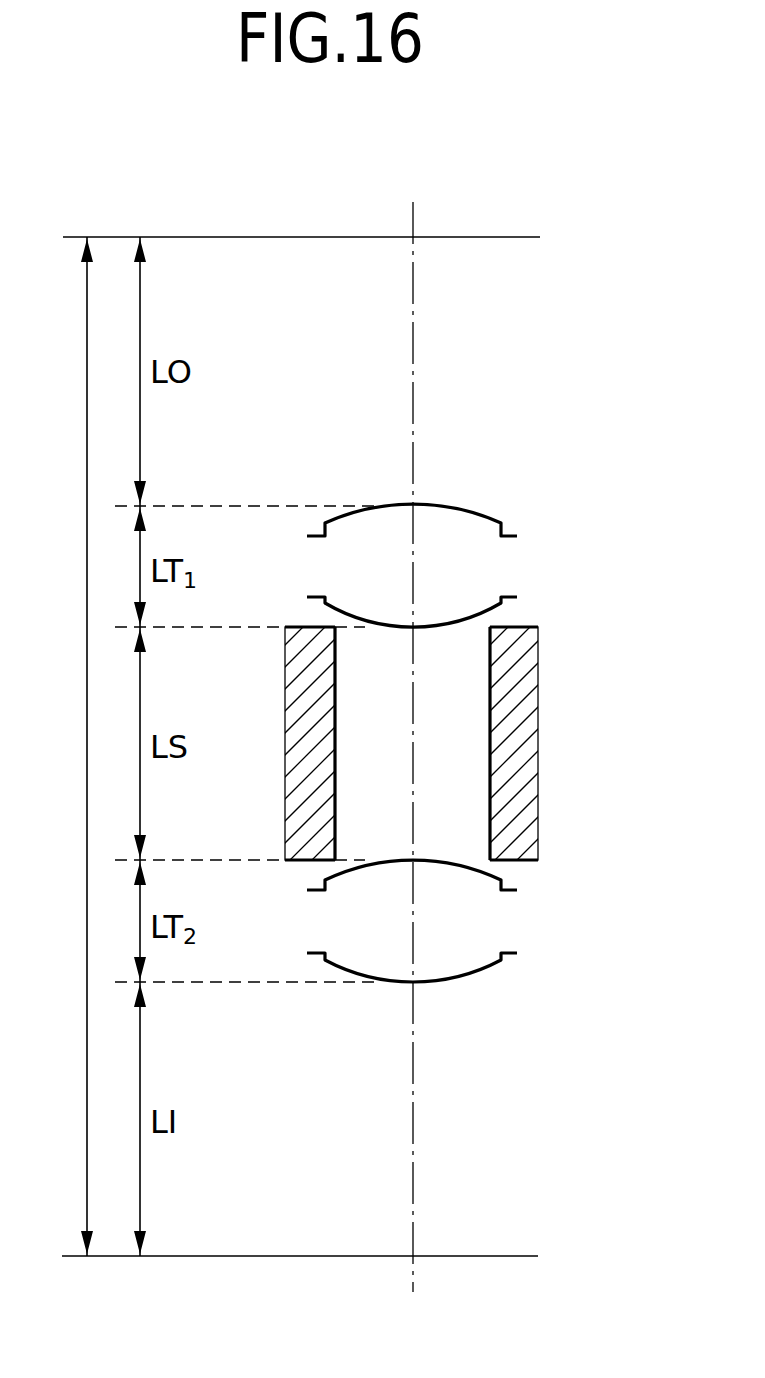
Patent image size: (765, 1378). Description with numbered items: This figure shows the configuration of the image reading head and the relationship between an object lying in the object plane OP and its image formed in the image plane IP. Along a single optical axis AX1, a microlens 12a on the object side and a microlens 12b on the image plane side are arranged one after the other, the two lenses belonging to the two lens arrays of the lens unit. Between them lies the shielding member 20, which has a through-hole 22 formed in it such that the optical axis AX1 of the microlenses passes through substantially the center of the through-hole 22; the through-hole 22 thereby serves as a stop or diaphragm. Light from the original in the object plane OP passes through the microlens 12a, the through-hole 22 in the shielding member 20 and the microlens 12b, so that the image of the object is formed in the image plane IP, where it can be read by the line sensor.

The microlens on the object side 12a is at (462, 530).
The microlens on the image plane side 12b is at (468, 958).
The shielding member 20 is at (517, 697).
The through-hole 22 is at (450, 763).
The optical axis AX1 is at (413, 323).
The object plane OP is at (329, 238).
The image plane IP is at (320, 1257).